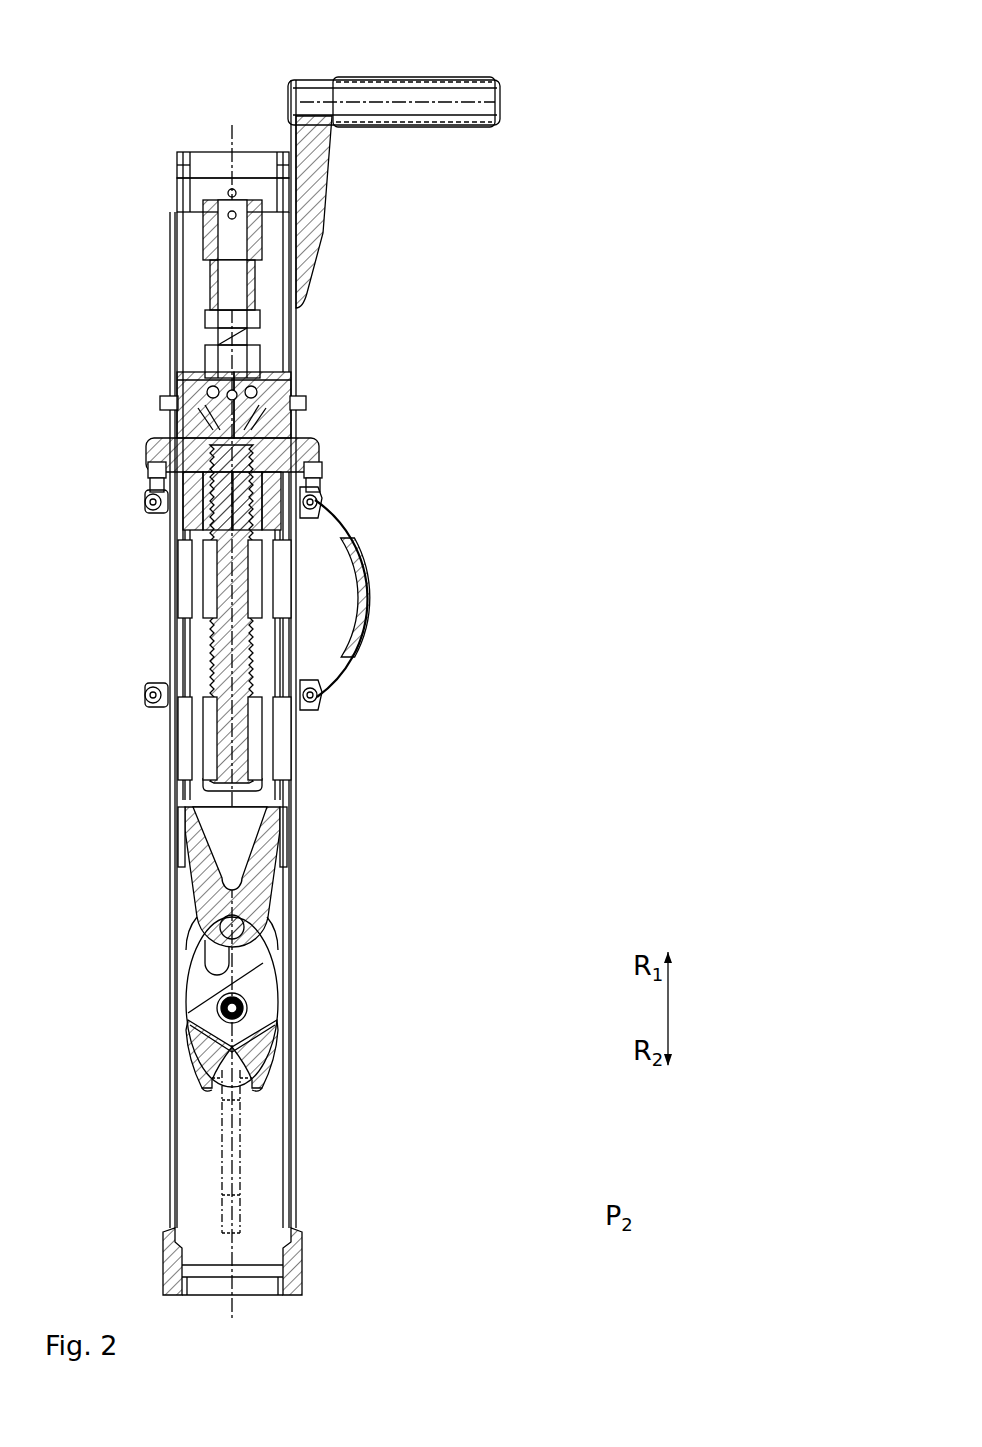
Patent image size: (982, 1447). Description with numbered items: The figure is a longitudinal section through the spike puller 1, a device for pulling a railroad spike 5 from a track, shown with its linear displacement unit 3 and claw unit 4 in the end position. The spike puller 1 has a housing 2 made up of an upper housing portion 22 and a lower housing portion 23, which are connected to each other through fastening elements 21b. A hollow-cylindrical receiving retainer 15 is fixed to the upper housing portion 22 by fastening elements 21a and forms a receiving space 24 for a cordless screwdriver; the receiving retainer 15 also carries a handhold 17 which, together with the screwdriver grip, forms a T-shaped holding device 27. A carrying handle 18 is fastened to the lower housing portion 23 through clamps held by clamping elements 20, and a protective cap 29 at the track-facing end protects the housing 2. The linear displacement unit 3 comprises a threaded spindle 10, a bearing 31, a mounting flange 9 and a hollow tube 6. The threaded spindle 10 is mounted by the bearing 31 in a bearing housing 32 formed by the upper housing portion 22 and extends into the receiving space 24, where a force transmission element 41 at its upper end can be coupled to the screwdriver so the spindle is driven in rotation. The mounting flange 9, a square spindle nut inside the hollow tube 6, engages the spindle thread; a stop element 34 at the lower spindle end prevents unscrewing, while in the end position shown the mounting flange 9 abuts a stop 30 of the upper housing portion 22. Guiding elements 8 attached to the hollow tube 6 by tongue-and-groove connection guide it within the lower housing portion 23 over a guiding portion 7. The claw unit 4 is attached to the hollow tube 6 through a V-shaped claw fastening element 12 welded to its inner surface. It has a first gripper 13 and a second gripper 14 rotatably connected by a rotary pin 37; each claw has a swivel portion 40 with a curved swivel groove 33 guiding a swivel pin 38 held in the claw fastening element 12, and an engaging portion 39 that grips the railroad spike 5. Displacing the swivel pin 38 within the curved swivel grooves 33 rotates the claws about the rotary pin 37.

The spike puller 1 is at (490, 718).
The housing 2 is at (298, 840).
The linear displacement unit 3 is at (172, 652).
The claw unit 4 is at (280, 1017).
The railroad spike 5 is at (240, 1170).
The hollow tube 6 is at (185, 668).
The guiding portion 7 is at (180, 595).
The guiding elements 8 is at (185, 560).
The mounting flange 9 is at (300, 470).
The threaded spindle 10 is at (192, 535).
The claw fastening element 12 is at (280, 875).
The first gripper 13 is at (183, 1000).
The second gripper 14 is at (280, 985).
The receiving retainer 15 is at (296, 358).
The handhold 17 is at (443, 80).
The carrying handle 18 is at (355, 613).
The clamping elements 20 is at (148, 500).
The fastening elements 21a is at (162, 403).
The fastening elements 21b is at (313, 480).
The upper housing portion 22 is at (305, 440).
The lower housing portion 23 is at (295, 907).
The receiving space 24 is at (188, 220).
The holding device 27 is at (390, 78).
The protective cap 29 is at (300, 1280).
The stop 30 is at (150, 458).
The bearing 31 is at (177, 393).
The bearing housing 32 is at (265, 385).
The curved swivel groove 33 is at (215, 965).
The stop element 34 is at (210, 788).
The rotary pin 37 is at (247, 1008).
The swivel pin 38 is at (218, 926).
The engaging portion 39 is at (210, 1083).
The swivel portion 40 is at (195, 970).
The force transmission element 41 is at (250, 205).